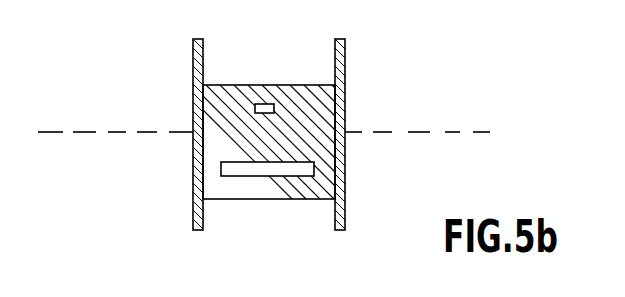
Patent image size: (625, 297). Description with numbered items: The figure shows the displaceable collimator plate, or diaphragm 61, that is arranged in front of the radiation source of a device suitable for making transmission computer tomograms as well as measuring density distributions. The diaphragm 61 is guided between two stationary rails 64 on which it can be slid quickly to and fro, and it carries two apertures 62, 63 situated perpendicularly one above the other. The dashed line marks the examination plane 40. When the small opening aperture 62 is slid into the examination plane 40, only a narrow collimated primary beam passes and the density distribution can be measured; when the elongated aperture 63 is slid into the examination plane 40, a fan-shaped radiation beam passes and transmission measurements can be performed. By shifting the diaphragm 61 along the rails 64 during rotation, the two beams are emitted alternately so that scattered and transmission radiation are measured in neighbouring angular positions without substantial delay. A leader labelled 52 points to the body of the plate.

The examination plane 40 is at (380, 130).
The transducer body 52 is at (269, 144).
The diaphragm 61 is at (223, 110).
The opening aperture 62 is at (264, 108).
The aperture 63 is at (275, 167).
The stationary rails 64 is at (193, 62).